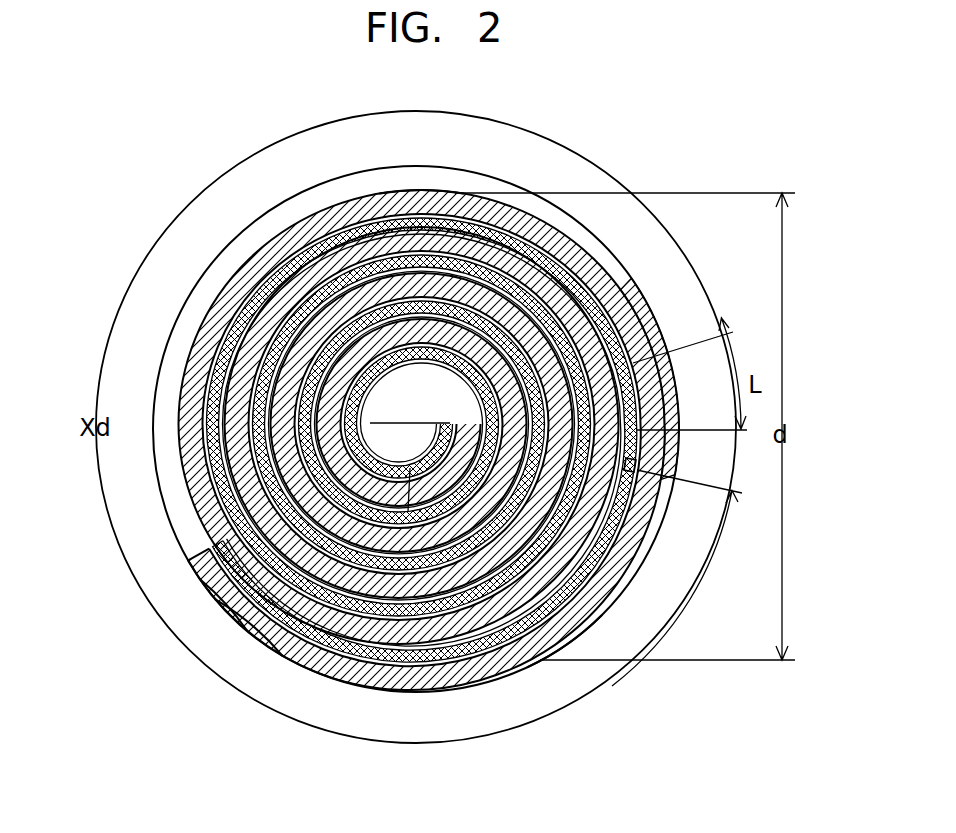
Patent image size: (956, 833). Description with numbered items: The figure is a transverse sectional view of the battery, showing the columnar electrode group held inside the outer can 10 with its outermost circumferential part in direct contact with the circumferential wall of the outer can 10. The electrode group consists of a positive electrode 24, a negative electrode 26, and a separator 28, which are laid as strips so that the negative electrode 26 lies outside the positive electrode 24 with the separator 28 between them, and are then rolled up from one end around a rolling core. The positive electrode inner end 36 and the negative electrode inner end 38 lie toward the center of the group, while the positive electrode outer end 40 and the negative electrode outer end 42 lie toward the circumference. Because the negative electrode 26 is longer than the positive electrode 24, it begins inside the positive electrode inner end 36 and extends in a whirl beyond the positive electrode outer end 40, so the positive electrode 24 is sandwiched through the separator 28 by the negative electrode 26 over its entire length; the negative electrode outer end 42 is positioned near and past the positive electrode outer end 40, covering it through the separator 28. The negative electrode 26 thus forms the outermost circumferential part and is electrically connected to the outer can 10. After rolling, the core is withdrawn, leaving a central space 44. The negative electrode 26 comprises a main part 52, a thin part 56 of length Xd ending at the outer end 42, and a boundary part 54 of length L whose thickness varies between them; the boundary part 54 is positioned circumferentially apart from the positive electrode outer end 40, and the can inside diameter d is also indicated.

The outer can 10 is at (186, 330).
The positive electrode 24 is at (237, 532).
The negative electrode 26 is at (230, 600).
The separator 28 is at (280, 638).
The positive electrode inner end 36 is at (633, 363).
The negative electrode inner end 38 is at (327, 657).
The positive electrode outer end 40 is at (635, 566).
The negative electrode outer end 42 is at (640, 478).
The space 44 is at (253, 277).
The main part 52 is at (566, 643).
The boundary part 54 is at (633, 393).
The thin part 56 is at (408, 195).